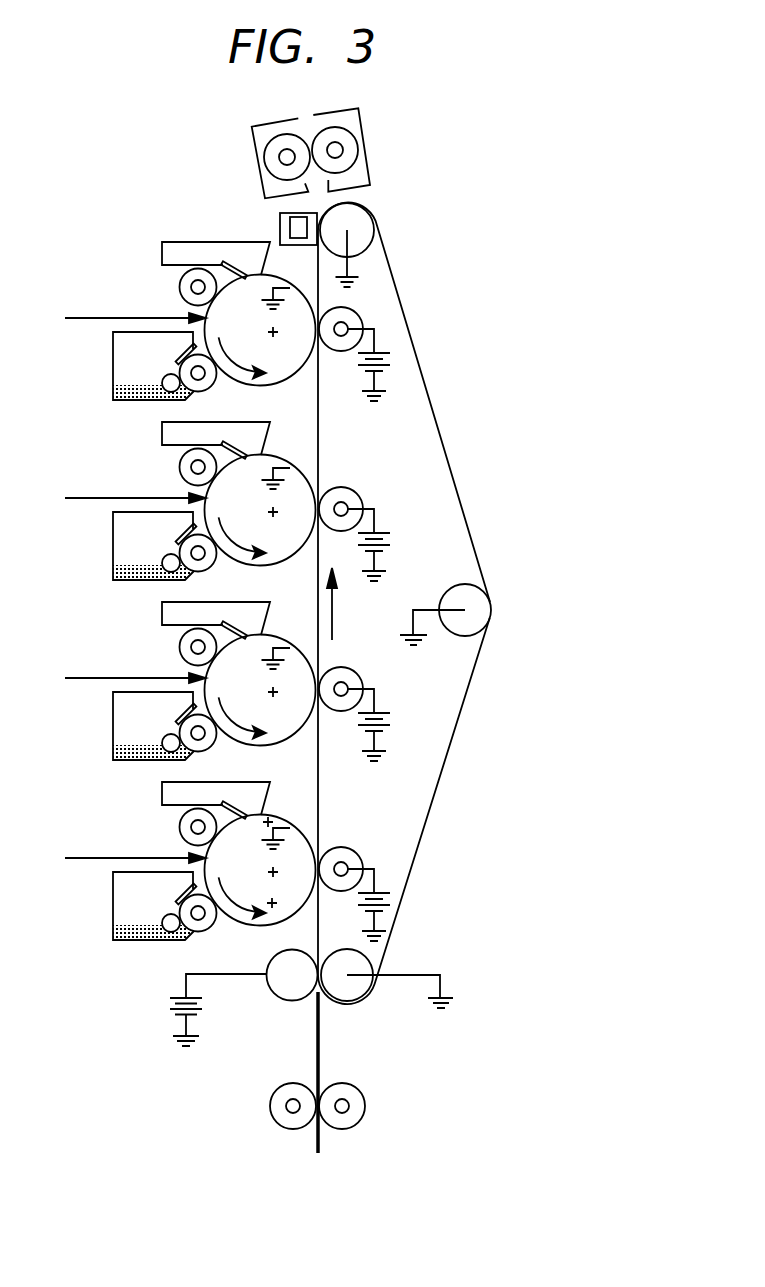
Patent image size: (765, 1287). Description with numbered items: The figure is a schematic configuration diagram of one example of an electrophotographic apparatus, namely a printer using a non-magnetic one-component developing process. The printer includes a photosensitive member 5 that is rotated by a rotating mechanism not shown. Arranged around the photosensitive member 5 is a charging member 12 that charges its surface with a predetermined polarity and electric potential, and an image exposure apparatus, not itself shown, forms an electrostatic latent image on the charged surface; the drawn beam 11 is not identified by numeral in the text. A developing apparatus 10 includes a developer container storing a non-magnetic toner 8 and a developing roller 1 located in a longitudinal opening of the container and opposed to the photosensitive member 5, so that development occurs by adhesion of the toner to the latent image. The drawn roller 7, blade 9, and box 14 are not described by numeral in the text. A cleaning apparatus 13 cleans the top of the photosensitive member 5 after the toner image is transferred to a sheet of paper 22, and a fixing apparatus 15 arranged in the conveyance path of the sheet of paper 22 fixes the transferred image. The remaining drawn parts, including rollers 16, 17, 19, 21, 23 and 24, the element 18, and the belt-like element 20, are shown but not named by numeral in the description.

The developing roller 1 is at (212, 385).
The photosensitive member 5 is at (291, 377).
The toner supply roller 7 is at (148, 400).
The non-magnetic toner 8 is at (114, 388).
The regulating blade 9 is at (178, 358).
The developing apparatus 10 is at (113, 352).
The exposure light 11 is at (83, 317).
The charging member 12 is at (180, 287).
The cleaning apparatus 13 is at (162, 248).
The sensor 14 is at (280, 222).
The fixing apparatus 15 is at (367, 135).
The drive roller 16 is at (376, 228).
The primary transfer roller 17 is at (361, 313).
The transfer bias power supply 18 is at (390, 358).
The tension roller 19 is at (492, 610).
The intermediate transfer belt 20 is at (456, 725).
The secondary transfer inner roller 21 is at (366, 994).
The sheet of paper 22 is at (320, 1038).
The conveying rollers 23 is at (365, 1104).
The secondary transfer roller 24 is at (283, 998).